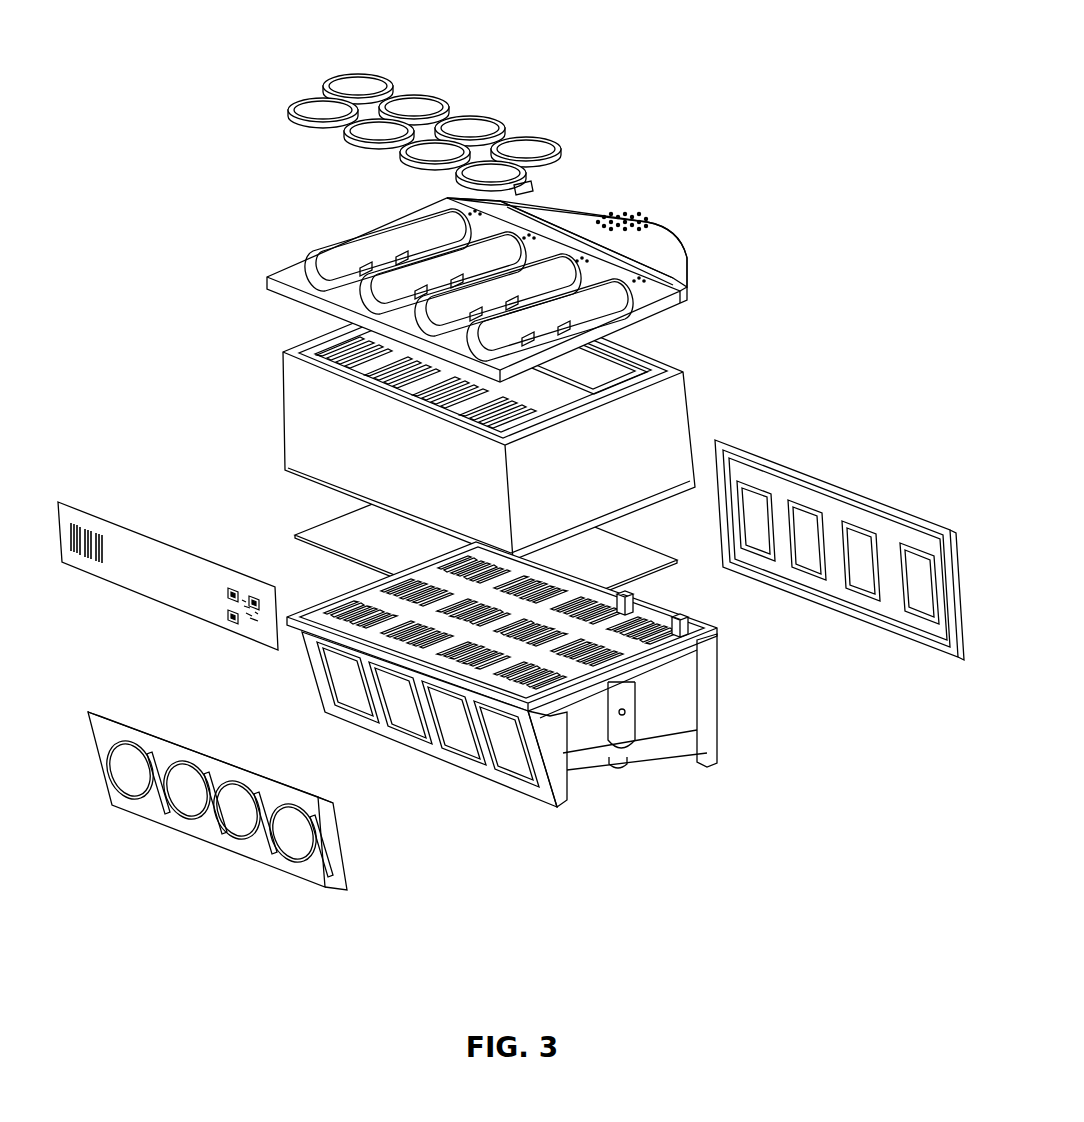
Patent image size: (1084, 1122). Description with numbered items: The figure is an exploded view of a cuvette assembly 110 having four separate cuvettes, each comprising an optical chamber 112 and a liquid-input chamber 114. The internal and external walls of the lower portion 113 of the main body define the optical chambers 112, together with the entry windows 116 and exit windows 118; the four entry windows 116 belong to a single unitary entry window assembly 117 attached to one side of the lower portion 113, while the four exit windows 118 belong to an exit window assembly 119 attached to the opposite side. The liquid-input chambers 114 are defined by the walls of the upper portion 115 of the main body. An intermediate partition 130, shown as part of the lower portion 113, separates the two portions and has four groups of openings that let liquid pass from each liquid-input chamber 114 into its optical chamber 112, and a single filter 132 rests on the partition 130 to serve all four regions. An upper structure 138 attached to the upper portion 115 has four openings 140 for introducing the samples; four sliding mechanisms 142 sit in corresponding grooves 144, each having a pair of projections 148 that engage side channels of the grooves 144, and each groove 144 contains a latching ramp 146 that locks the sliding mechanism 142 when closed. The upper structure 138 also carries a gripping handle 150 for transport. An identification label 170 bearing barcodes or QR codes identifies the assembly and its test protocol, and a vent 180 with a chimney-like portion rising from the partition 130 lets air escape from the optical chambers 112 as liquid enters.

The cuvette assembly 110 is at (649, 48).
The optical chamber 112 is at (525, 759).
The lower portion 113 is at (685, 695).
The liquid-input chamber 114 is at (605, 385).
The upper portion 115 is at (667, 418).
The entry window 116 is at (305, 845).
The entry window assembly 117 is at (100, 730).
The exit window 118 is at (928, 614).
The exit window assembly 119 is at (912, 535).
The intermediate partition 130 is at (640, 638).
The filter 132 is at (612, 568).
The upper structure 138 is at (290, 278).
The opening 140 is at (550, 190).
The sliding mechanism 142 is at (543, 144).
The groove 144 is at (658, 270).
The latching ramp 146 is at (607, 308).
The projection 148 is at (459, 320).
The gripping handle 150 is at (641, 217).
The identification label 170 is at (195, 570).
The vent 180 is at (692, 614).